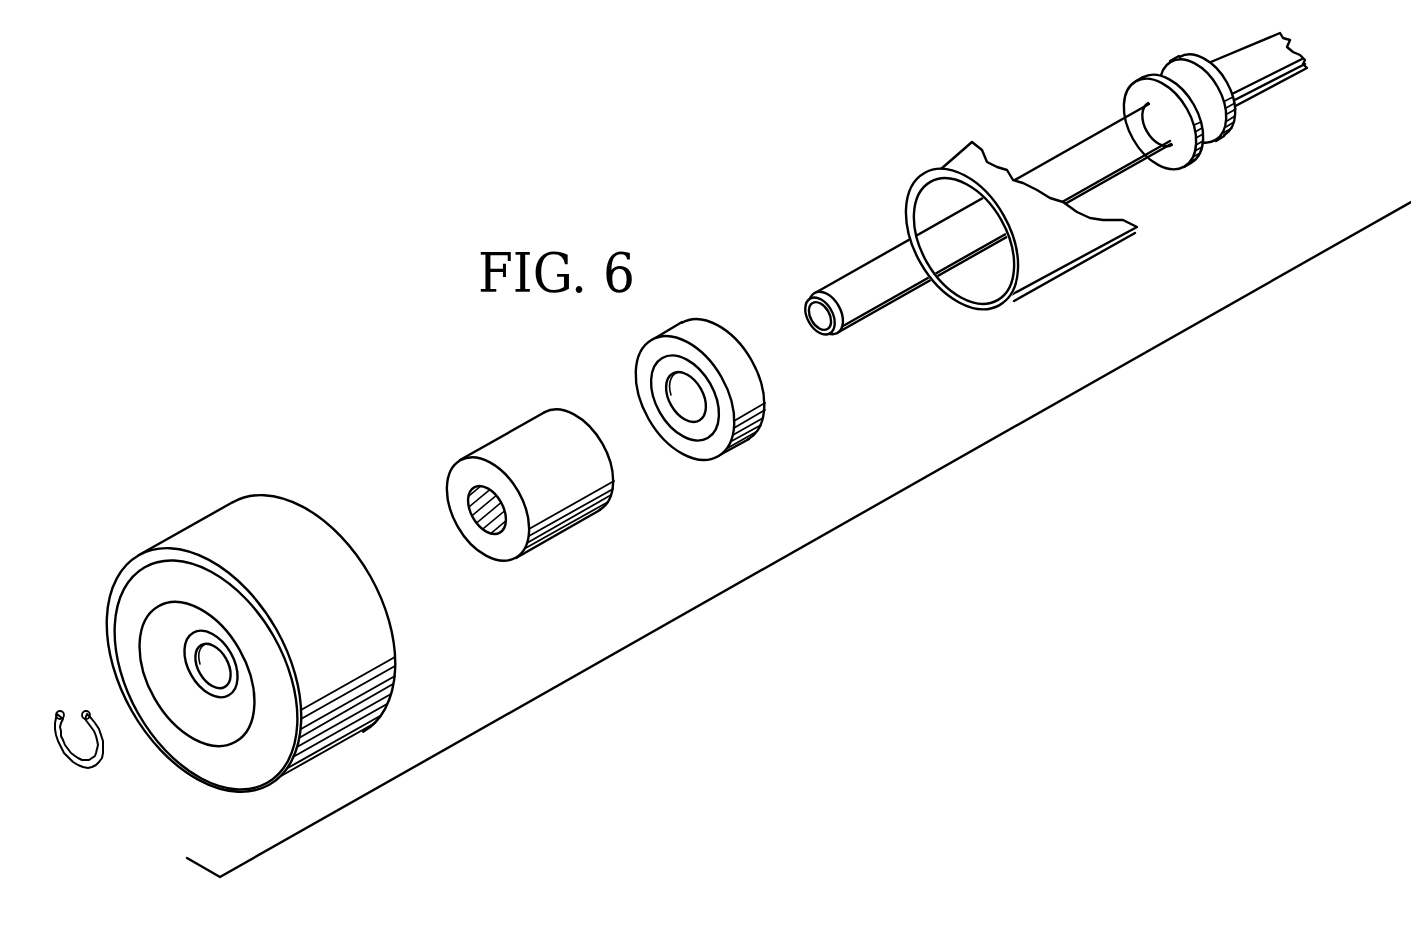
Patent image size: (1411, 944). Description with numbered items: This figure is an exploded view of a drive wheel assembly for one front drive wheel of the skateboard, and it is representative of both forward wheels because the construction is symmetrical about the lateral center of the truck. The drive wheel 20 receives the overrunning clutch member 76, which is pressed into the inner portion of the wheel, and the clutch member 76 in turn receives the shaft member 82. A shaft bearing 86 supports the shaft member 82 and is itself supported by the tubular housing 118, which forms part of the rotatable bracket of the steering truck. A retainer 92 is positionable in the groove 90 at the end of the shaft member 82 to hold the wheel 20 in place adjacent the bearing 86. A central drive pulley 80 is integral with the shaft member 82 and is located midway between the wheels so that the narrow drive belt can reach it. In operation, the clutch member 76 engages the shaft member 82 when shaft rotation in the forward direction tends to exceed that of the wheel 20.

The drive wheel 20 is at (400, 688).
The retainer 92 is at (93, 767).
The overrunning clutch member 76 is at (570, 527).
The shaft bearing 86 is at (757, 432).
The groove 90 is at (843, 334).
The tubular housing 118 is at (1057, 270).
The shaft member 82 is at (1133, 177).
The central drive pulley 80 is at (1227, 143).